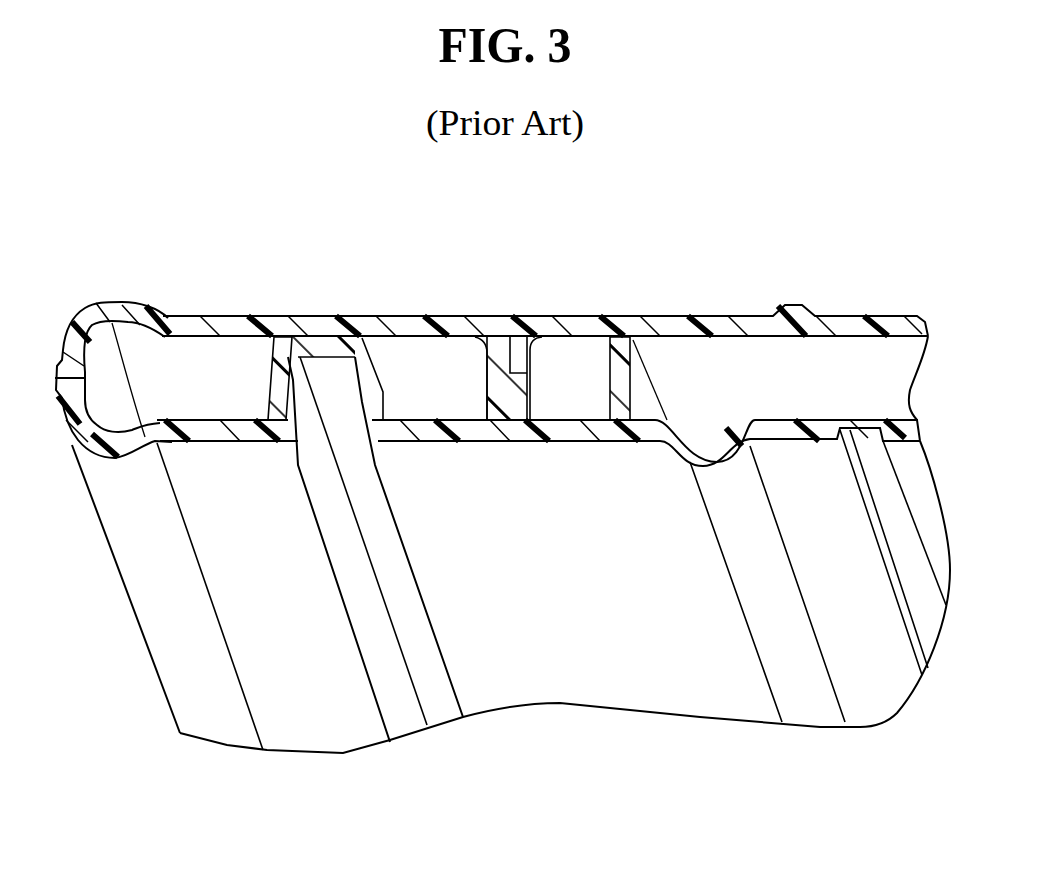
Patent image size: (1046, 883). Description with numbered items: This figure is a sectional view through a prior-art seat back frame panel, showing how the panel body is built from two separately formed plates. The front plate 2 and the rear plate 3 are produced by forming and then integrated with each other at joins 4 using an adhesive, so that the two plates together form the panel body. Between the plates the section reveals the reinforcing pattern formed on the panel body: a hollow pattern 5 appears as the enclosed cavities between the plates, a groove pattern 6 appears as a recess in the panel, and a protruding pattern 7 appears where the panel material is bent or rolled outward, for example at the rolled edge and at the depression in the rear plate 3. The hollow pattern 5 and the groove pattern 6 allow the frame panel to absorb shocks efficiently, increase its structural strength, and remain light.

The front plate 2 is at (207, 444).
The rear plate 3 is at (181, 299).
The join 4 is at (85, 379).
The hollow pattern 5 is at (203, 347).
The groove pattern 6 is at (318, 376).
The protruding pattern 7 is at (117, 303).